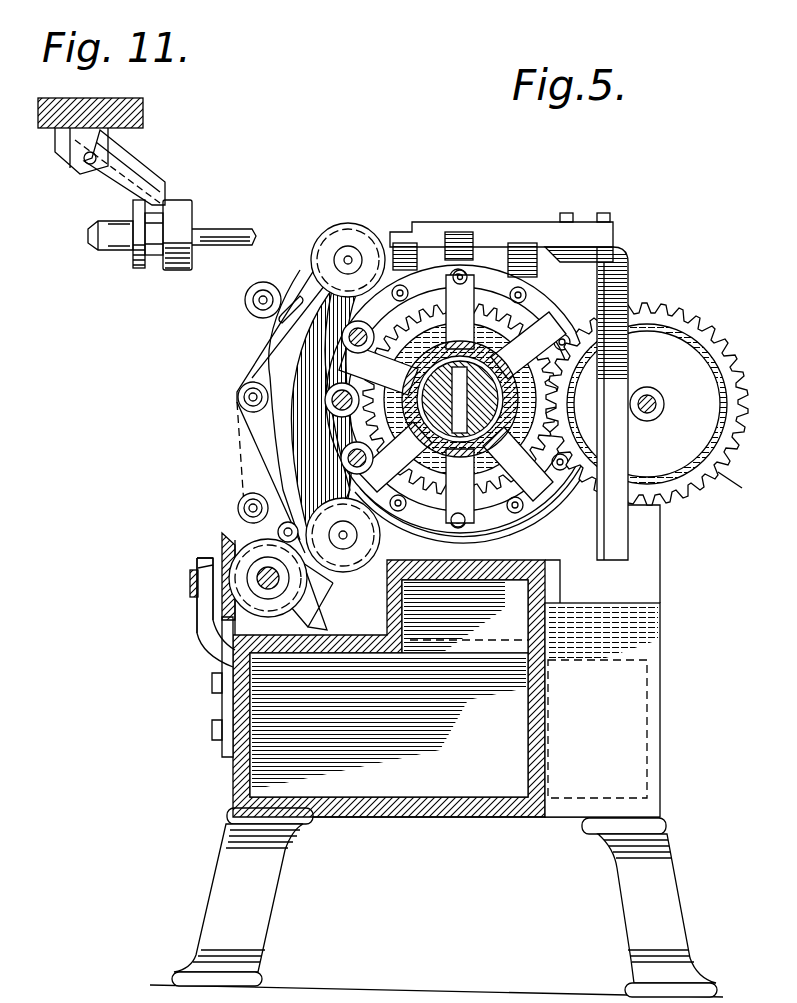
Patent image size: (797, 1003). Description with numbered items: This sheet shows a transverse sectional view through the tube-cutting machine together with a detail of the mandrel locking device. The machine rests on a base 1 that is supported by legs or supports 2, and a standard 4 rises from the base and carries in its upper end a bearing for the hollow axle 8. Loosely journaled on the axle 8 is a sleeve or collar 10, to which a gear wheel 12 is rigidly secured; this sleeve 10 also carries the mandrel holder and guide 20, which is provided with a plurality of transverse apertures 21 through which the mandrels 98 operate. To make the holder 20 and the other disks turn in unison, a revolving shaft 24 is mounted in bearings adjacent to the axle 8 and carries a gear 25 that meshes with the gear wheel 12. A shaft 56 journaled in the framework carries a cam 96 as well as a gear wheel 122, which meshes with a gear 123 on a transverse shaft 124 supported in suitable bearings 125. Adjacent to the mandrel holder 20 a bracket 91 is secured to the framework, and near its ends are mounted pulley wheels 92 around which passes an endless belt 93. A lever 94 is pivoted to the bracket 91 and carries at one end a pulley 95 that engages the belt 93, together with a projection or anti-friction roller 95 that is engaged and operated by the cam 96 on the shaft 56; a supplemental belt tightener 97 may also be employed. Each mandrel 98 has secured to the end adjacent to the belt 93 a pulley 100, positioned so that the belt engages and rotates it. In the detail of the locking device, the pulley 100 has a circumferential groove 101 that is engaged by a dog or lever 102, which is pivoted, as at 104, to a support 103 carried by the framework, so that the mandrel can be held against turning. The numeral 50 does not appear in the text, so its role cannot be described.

In FIG. 5, the base 1 is at (568, 788).
In FIG. 5, the legs or supports 2 is at (253, 900).
In FIG. 5, the standard 4 is at (662, 580).
In FIG. 5, the hollow axle 8 is at (508, 365).
In FIG. 5, the sleeve or collar 10 is at (505, 432).
In FIG. 5, the gear wheel 12 is at (672, 295).
In FIG. 5, the mandrel holder and guide 20 is at (522, 338).
In FIG. 5, the transverse apertures 21 is at (465, 272).
In FIG. 5, the revolving shaft 24 is at (652, 395).
In FIG. 5, the gear 25 is at (731, 488).
In FIG. 5, the base plate 50 is at (358, 993).
In FIG. 5, the shaft 56 is at (258, 580).
In FIG. 5, the bracket 91 is at (297, 363).
In FIG. 5, the pulley wheels 92 is at (360, 243).
In FIG. 5, the endless belt 93 is at (272, 341).
In FIG. 5, the lever 94 is at (252, 467).
In FIG. 5, the pulley and anti-friction roller 95 is at (238, 398).
In FIG. 5, the cam 96 is at (253, 605).
In FIG. 5, the supplemental belt tightener 97 is at (264, 284).
In FIG. 11, the mandrels 98 is at (230, 237).
In FIG. 5, the mandrels 98 is at (350, 341).
In FIG. 11, the pulley 100 is at (180, 214).
In FIG. 11, the circumferential groove 101 is at (152, 258).
In FIG. 11, the dog or lever 102 is at (140, 183).
In FIG. 5, the dog or lever 102 is at (458, 250).
In FIG. 11, the support 103 is at (146, 94).
In FIG. 5, the support 103 is at (604, 278).
In FIG. 11, the pivot 104 is at (88, 162).
In FIG. 5, the pivot 104 is at (547, 240).
In FIG. 5, the gear wheel 122 is at (245, 538).
In FIG. 5, the gear 123 is at (225, 549).
In FIG. 5, the transverse shaft 124 is at (190, 580).
In FIG. 5, the bearings 125 is at (205, 566).